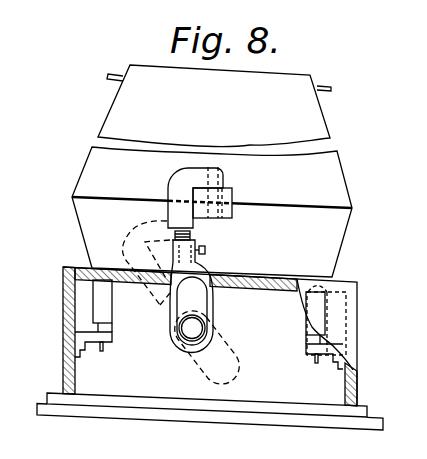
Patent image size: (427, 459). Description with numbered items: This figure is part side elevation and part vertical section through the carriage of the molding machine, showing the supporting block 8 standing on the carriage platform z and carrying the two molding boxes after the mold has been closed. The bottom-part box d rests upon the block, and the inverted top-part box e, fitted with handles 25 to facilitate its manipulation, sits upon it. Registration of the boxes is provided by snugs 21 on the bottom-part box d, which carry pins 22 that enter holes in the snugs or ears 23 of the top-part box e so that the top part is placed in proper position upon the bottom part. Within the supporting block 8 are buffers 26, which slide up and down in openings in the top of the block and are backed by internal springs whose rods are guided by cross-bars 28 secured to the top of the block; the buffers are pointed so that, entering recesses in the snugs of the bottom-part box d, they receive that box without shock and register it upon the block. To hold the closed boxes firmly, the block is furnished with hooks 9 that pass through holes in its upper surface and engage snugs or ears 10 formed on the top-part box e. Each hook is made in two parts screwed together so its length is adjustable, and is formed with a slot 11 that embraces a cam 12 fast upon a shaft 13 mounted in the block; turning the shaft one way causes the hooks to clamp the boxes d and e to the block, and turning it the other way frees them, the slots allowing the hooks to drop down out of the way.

The supporting block 8 is at (221, 336).
The hooks 9 is at (168, 185).
The snugs or ears 10 is at (235, 190).
The slot 11 is at (191, 291).
The cams 12 is at (192, 328).
The shaft 13 is at (176, 338).
The snugs 21 is at (233, 213).
The pins 22 is at (219, 170).
The snugs or ears 23 is at (234, 190).
The handles 25 is at (217, 80).
The buffers 26 is at (306, 314).
The cross-bars 28 is at (118, 338).
The top-part box e is at (214, 126).
The bottom-part box d is at (212, 212).
The platform Z is at (368, 407).